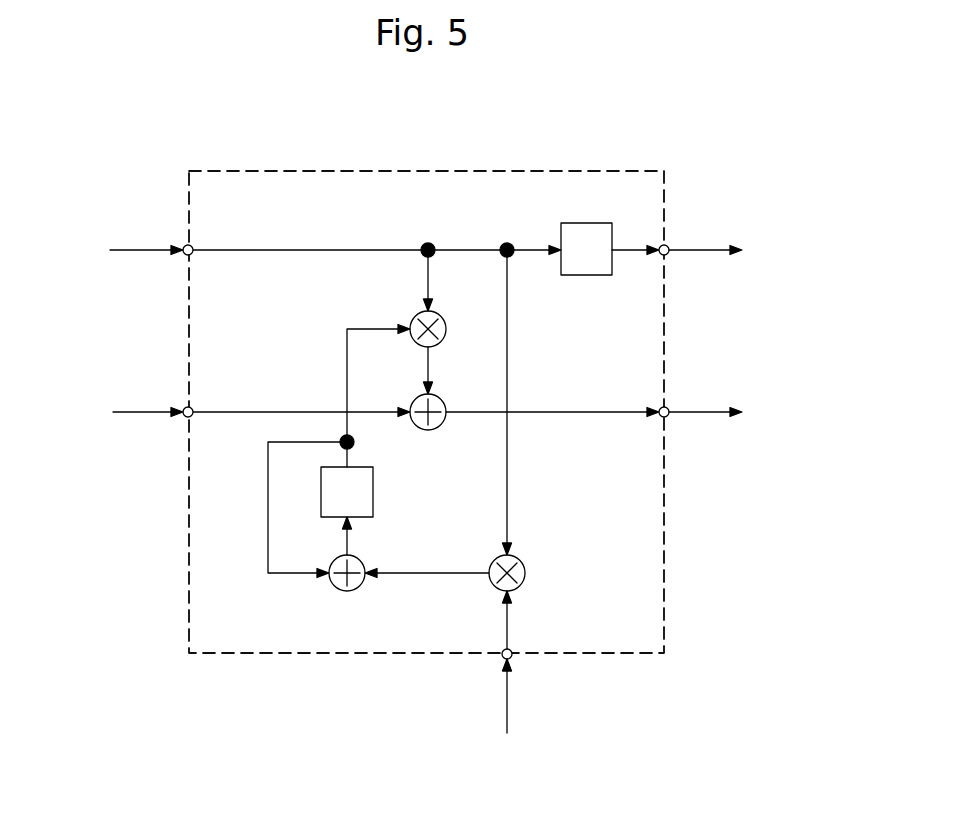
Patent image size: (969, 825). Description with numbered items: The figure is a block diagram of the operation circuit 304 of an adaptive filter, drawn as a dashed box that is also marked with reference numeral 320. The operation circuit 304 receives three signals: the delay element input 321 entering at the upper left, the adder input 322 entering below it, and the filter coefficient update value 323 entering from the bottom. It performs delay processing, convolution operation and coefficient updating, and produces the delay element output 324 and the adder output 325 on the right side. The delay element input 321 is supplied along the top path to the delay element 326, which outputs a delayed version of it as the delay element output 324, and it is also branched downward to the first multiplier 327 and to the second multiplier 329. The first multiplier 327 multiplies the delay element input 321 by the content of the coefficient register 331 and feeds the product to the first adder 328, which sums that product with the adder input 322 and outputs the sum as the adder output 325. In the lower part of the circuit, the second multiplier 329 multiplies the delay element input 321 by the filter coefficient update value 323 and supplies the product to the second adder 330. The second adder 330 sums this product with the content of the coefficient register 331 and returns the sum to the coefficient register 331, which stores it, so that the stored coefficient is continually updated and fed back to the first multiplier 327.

The operation circuit 304 is at (426, 368).
The lattice filter stage 320 is at (487, 417).
The delay element input 321 is at (125, 298).
The adder input 322 is at (125, 462).
The filter coefficient update value 323 is at (562, 713).
The delay element output 324 is at (725, 295).
The adder output 325 is at (720, 455).
The delay element 326 is at (611, 296).
The first multiplier 327 is at (497, 361).
The first adder 328 is at (497, 448).
The second multiplier 329 is at (566, 545).
The second adder 330 is at (383, 638).
The coefficient register 331 is at (405, 510).